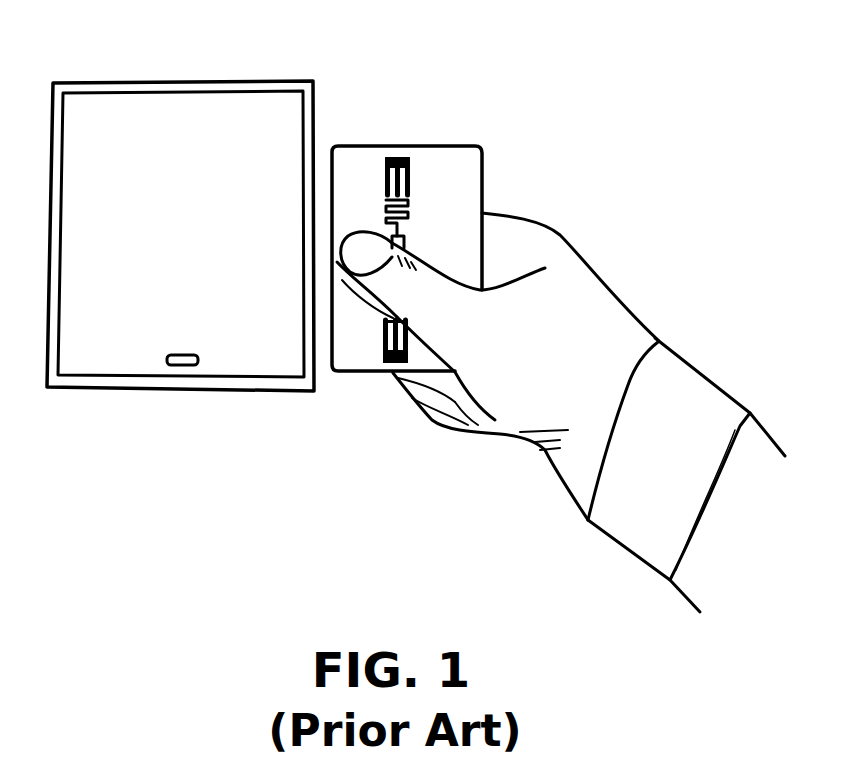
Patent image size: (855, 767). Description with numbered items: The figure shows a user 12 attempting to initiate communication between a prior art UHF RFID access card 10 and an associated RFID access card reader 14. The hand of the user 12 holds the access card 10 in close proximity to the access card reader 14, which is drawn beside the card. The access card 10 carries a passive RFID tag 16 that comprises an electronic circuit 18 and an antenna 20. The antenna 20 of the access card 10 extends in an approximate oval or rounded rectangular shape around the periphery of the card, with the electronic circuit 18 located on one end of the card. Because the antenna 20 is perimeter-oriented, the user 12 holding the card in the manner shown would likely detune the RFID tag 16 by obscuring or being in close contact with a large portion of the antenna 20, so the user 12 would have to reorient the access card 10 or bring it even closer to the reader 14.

The RFID access card 10 is at (335, 263).
The user 12 is at (588, 306).
The RFID access card reader 14 is at (227, 140).
The RFID tag 16 is at (478, 222).
The electronic circuit 18 is at (403, 247).
The antenna 20 is at (408, 158).